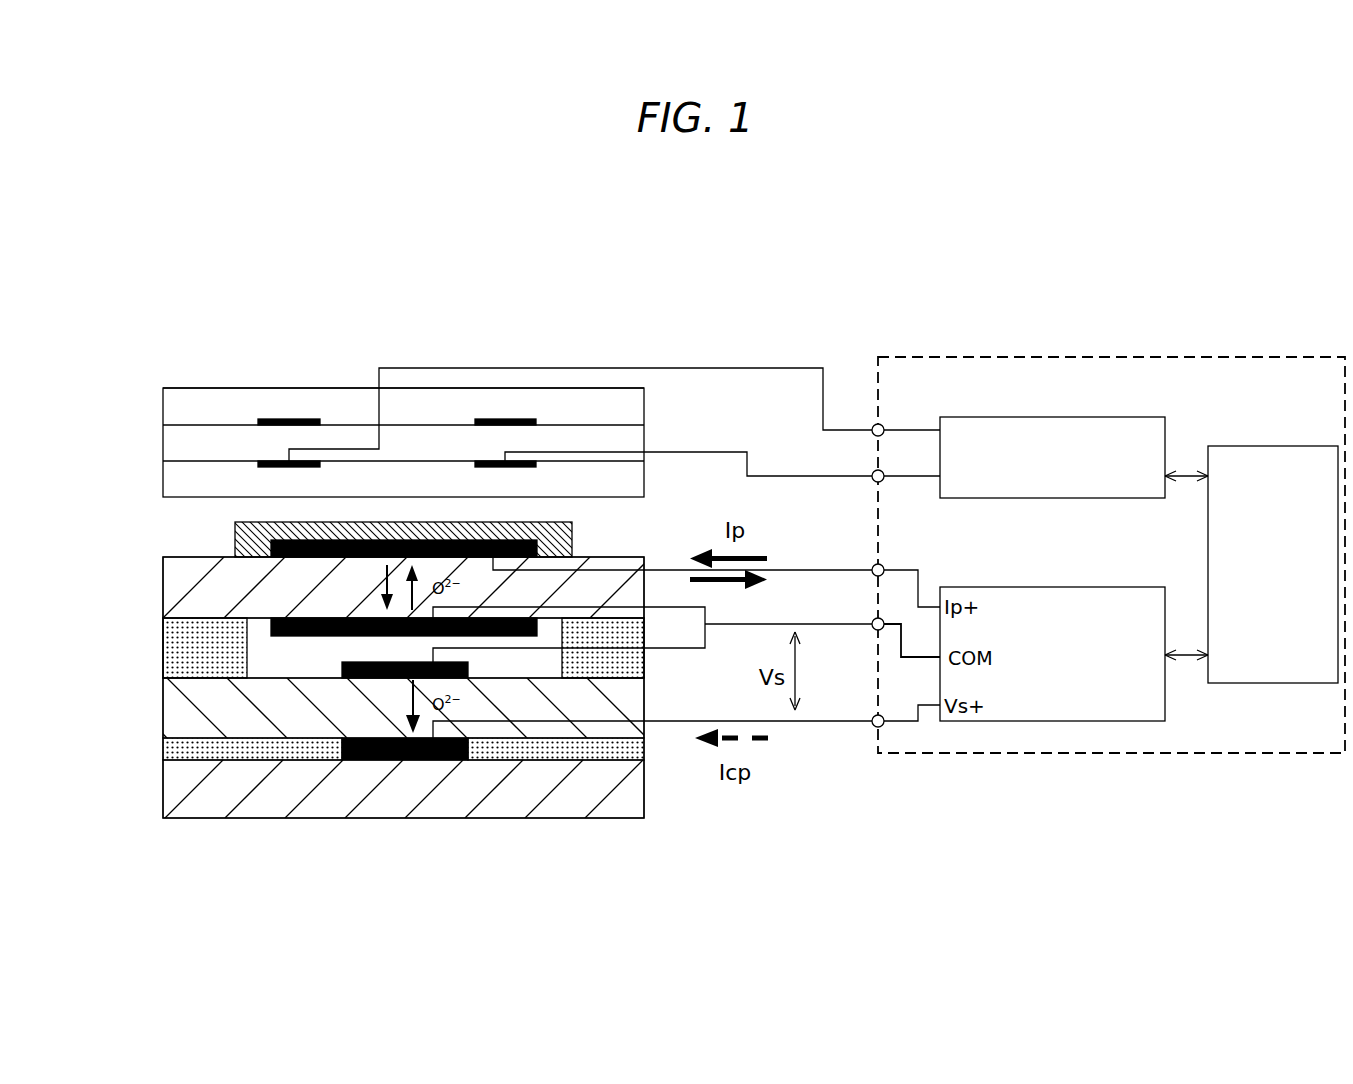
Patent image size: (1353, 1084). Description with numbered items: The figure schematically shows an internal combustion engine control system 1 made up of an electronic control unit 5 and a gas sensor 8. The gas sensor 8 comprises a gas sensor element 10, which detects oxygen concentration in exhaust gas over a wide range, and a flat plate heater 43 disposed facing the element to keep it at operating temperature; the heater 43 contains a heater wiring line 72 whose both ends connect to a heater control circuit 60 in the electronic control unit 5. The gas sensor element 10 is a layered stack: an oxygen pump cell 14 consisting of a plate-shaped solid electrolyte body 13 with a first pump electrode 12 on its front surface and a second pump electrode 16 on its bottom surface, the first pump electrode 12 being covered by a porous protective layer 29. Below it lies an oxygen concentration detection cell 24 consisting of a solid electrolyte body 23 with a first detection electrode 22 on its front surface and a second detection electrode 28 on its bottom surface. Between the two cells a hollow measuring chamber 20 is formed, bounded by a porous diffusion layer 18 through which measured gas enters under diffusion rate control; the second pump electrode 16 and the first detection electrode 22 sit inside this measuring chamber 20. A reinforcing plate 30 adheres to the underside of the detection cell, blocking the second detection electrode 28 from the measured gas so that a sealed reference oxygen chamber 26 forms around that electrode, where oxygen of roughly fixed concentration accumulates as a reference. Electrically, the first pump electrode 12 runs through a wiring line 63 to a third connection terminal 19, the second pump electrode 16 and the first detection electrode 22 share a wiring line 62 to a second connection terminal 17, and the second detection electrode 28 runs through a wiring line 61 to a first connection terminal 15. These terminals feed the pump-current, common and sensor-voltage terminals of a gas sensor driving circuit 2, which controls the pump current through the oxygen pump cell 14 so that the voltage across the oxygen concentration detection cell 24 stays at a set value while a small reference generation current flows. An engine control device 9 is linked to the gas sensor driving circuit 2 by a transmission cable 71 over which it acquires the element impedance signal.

The internal combustion engine control system 1 is at (910, 303).
The gas sensor driving circuit 2 is at (1025, 587).
The electronic control unit 5 is at (1143, 357).
The gas sensor 8 is at (82, 328).
The engine control device 9 is at (1248, 446).
The gas sensor element 10 is at (102, 488).
The first pump electrode 12 is at (300, 563).
The solid electrolyte body 13 is at (182, 578).
The oxygen pump cell 14 is at (100, 513).
The first connection terminal 15 is at (873, 728).
The second pump electrode 16 is at (297, 621).
The second connection terminal 17 is at (873, 632).
The porous diffusion layer 18 is at (190, 633).
The third connection terminal 19 is at (873, 565).
The measuring chamber 20 is at (260, 648).
The first detection electrode 22 is at (340, 666).
The solid electrolyte body 23 is at (178, 713).
The oxygen concentration detection cell 24 is at (100, 663).
The reference oxygen chamber 26 is at (472, 757).
The second detection electrode 28 is at (340, 748).
The porous protective layer 29 is at (568, 533).
The reinforcing plate 30 is at (163, 795).
The heater 43 is at (220, 388).
The heater control circuit 60 is at (1025, 417).
The wiring line 61 is at (798, 722).
The wiring line 62 is at (762, 618).
The wiring line 63 is at (798, 568).
The transmission cable 71 is at (1190, 662).
The heater wiring line 72 is at (523, 467).